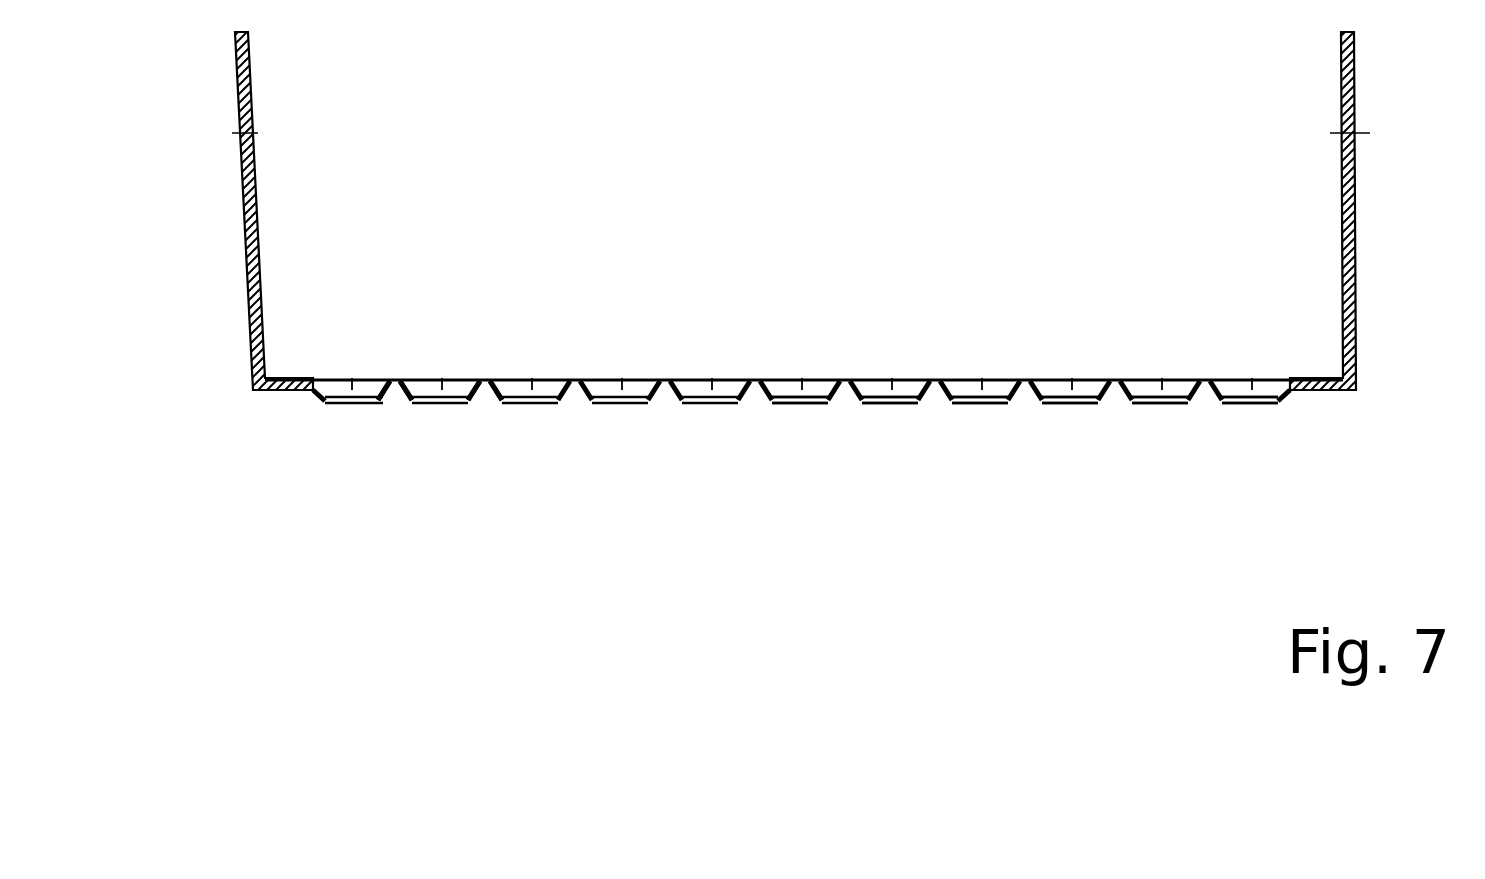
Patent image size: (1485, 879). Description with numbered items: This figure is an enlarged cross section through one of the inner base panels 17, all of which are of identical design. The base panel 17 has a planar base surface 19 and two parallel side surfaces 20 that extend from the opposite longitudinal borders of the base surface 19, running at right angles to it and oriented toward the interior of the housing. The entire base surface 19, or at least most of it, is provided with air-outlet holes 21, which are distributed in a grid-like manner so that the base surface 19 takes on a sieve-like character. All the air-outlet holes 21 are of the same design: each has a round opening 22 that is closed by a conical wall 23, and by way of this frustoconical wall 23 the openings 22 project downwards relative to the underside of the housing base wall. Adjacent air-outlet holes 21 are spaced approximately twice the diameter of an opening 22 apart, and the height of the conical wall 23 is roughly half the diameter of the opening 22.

The inner base panel 17 is at (795, 250).
The base surface 19 is at (278, 400).
The side surface 20 is at (243, 212).
The air-outlet hole 21 is at (880, 400).
The opening 22 is at (1180, 403).
The conical wall 23 is at (395, 400).